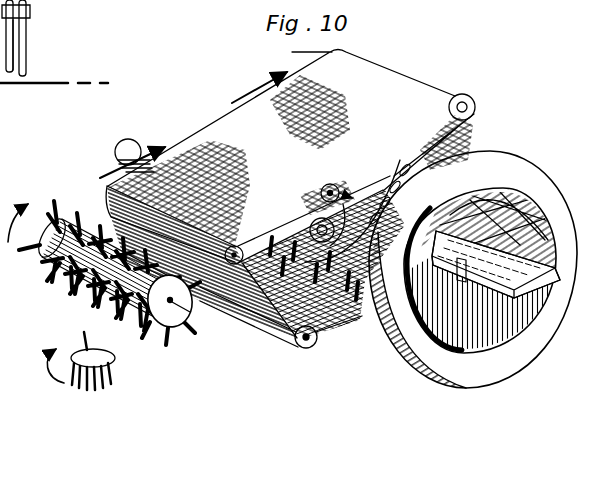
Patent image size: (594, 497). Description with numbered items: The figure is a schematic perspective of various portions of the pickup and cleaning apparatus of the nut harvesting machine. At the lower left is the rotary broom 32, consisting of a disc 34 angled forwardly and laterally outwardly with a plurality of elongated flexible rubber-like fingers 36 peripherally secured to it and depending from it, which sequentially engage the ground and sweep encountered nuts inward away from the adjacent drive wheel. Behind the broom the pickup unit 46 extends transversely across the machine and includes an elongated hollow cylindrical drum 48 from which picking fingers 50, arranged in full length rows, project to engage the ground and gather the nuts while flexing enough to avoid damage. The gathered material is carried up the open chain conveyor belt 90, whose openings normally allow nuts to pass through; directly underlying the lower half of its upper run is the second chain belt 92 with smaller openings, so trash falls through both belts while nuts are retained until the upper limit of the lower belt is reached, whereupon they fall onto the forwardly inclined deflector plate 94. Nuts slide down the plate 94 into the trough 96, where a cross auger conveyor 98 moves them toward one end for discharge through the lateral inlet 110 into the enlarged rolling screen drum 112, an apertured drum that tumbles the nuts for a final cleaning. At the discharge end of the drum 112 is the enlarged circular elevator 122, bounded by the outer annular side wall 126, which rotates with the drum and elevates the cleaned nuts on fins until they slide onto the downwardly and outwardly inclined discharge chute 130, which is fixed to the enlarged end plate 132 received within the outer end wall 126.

The rotary broom 32 is at (72, 349).
The disc 34 is at (54, 41).
The flexible fingers 36 is at (18, 33).
The pickup unit 46 is at (48, 196).
The drum 48 is at (173, 316).
The picking fingers 50 is at (156, 333).
The chain conveyor belt 90 is at (246, 130).
The second chain belt 92 is at (276, 227).
The deflector plate 94 is at (402, 166).
The trough 96 is at (347, 222).
The cross auger conveyor 98 is at (304, 202).
The lateral inlet 110 is at (140, 152).
The rolling screen drum 112 is at (350, 333).
The circular elevator 122 is at (490, 153).
The outer annular side wall 126 is at (528, 190).
The discharge chute 130 is at (510, 272).
The end plate 132 is at (473, 327).